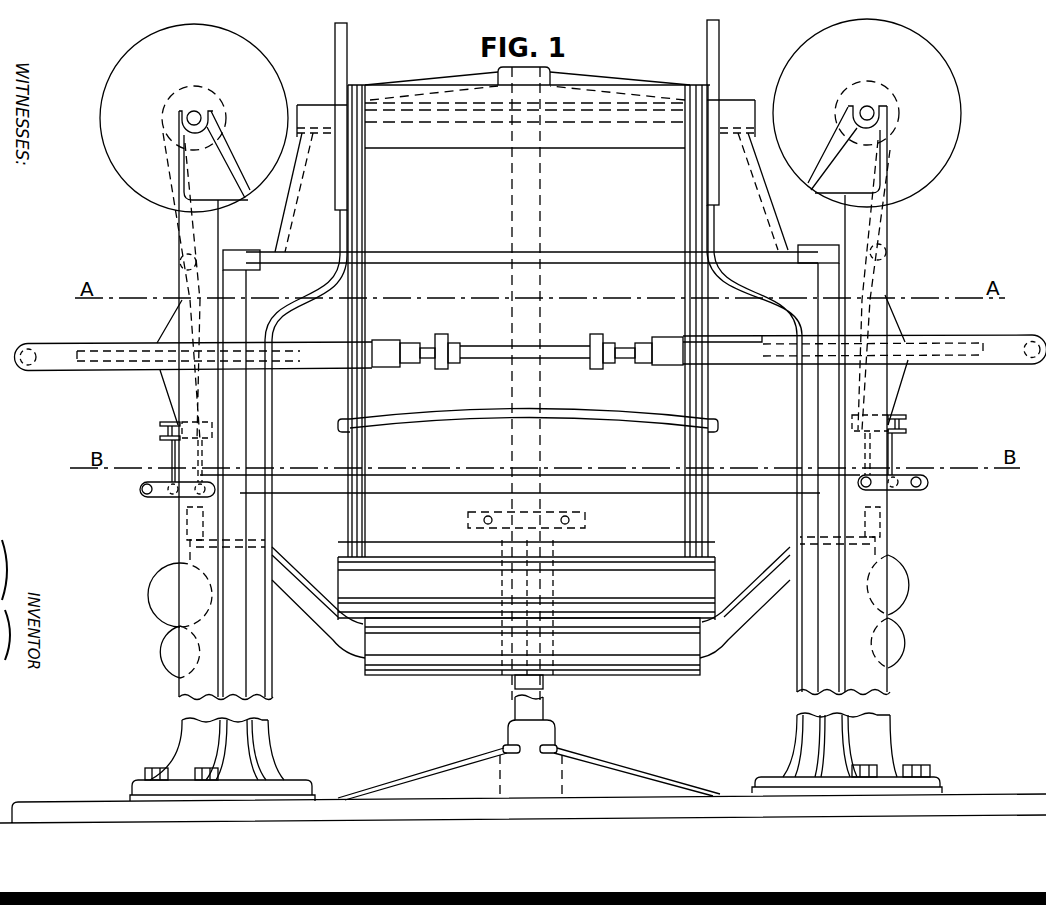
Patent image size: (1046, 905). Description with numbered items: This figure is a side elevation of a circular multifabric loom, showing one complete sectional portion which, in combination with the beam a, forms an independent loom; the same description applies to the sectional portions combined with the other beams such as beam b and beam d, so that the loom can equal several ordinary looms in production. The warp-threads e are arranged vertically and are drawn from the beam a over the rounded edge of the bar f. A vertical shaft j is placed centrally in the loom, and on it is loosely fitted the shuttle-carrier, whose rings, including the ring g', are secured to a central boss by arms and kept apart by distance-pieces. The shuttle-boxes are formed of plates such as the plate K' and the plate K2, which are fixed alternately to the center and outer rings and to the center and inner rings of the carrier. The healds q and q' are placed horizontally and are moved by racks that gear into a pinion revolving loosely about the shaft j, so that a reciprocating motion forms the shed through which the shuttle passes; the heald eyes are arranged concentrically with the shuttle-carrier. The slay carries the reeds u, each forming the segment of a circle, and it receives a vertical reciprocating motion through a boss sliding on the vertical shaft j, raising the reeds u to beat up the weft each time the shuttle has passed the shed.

The beam a is at (670, 90).
The beam b is at (795, 77).
The beam d is at (282, 96).
The warp-threads e is at (173, 227).
The bar f is at (181, 265).
The vertical shaft j is at (532, 223).
The reeds u is at (495, 392).
The heald q' is at (530, 338).
The heald q is at (557, 372).
The shuttle-box plate K' is at (536, 446).
The shuttle-box plate K2 is at (213, 431).
The ring g' is at (556, 472).